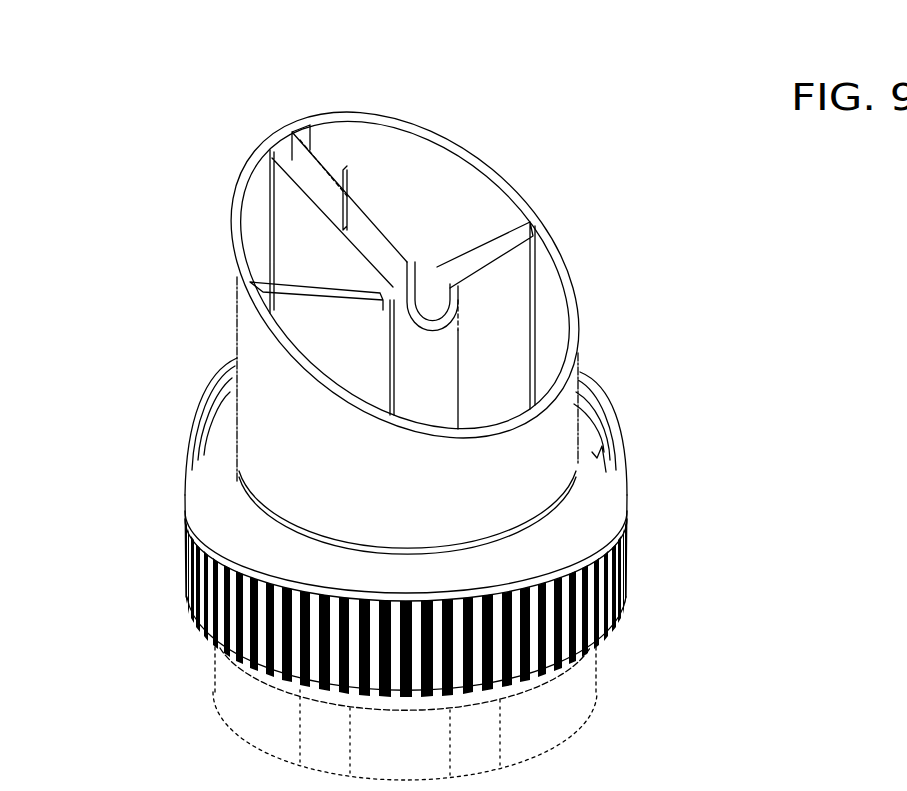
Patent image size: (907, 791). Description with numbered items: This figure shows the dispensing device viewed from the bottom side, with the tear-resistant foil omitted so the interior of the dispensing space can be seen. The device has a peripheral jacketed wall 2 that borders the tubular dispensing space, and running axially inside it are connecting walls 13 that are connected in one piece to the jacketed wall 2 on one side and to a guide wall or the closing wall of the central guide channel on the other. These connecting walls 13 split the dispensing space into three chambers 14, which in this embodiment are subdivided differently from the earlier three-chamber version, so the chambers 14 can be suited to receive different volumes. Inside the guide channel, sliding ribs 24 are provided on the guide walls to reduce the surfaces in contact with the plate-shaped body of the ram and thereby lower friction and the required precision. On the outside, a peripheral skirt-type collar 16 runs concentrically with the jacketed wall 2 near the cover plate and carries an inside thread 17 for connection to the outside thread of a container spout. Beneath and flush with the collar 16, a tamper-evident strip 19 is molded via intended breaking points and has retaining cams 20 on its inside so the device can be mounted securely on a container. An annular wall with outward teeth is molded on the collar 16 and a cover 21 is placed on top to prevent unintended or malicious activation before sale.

The peripheral jacketed wall 2 is at (282, 421).
The connecting wall 13 is at (308, 313).
The chamber 14 is at (300, 245).
The peripheral skirt-type collar 16 is at (548, 606).
The inside thread 17 is at (596, 447).
The tamper-evident strip 19 is at (550, 535).
The retaining cam 20 is at (590, 404).
The cover 21 is at (520, 718).
The sliding rib 24 is at (407, 288).